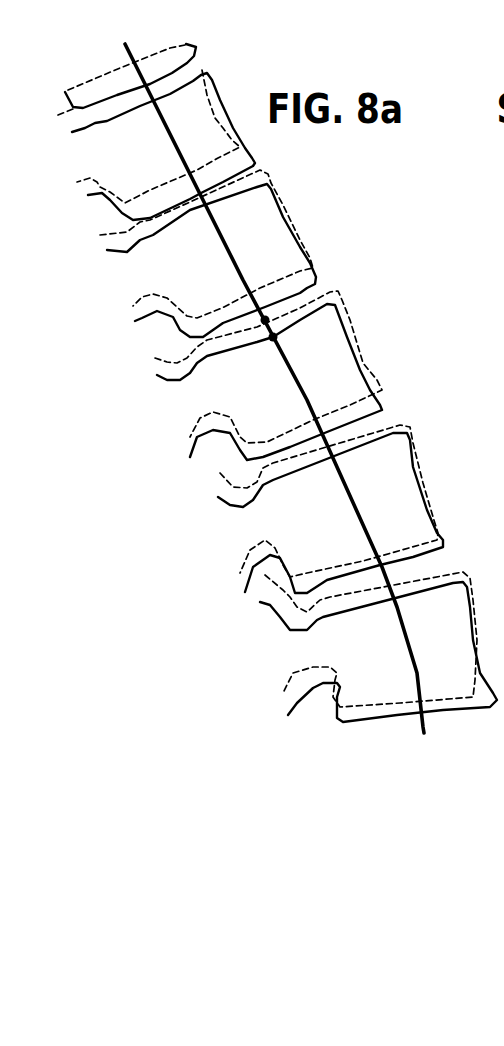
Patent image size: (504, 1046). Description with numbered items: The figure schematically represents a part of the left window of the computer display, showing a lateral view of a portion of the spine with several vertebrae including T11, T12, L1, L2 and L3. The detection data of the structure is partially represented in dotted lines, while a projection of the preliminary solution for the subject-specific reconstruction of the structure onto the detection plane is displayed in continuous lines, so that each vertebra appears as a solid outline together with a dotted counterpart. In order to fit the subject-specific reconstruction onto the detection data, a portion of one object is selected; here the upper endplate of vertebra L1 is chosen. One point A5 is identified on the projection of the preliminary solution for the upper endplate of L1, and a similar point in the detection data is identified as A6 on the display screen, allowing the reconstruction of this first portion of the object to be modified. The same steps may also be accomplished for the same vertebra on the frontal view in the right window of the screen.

The eleventh thoracic vertebra T11 is at (156, 132).
The twelfth thoracic vertebra T12 is at (208, 253).
The vertebra L1 is at (268, 375).
The second lumbar vertebra L2 is at (330, 509).
The third lumbar vertebra L3 is at (378, 647).
The point A6 is at (265, 320).
The point A5 is at (273, 337).